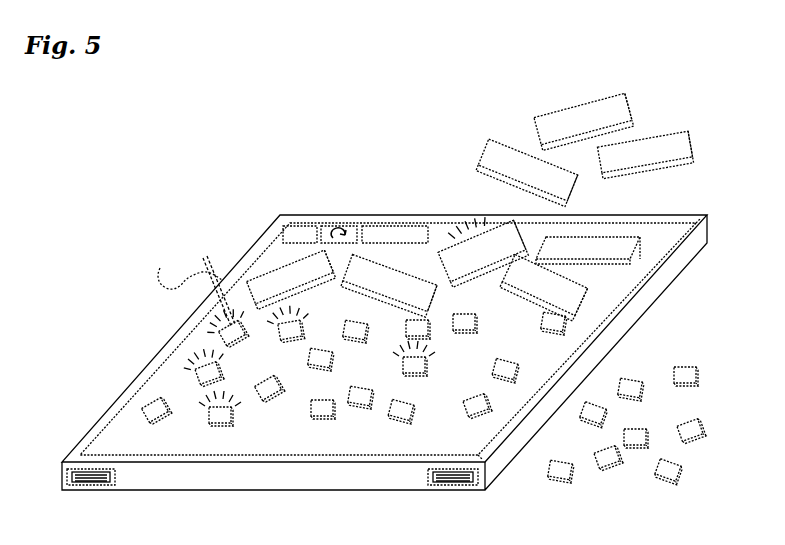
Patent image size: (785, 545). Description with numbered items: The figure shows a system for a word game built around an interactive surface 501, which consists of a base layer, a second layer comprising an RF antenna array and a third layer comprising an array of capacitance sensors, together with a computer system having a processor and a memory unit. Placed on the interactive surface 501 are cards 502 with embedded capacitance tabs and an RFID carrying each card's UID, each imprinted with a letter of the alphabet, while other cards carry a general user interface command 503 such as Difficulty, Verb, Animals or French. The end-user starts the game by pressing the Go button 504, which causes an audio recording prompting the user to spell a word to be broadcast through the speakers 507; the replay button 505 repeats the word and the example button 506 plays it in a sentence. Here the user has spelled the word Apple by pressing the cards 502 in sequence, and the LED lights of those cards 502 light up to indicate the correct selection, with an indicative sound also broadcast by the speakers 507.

The interactive surface 501 is at (690, 213).
The cards 502 is at (694, 420).
The general user interface command 503 is at (612, 152).
The Go button 504 is at (292, 226).
The replay button 505 is at (337, 226).
The example button 506 is at (378, 226).
The speakers 507 is at (90, 481).